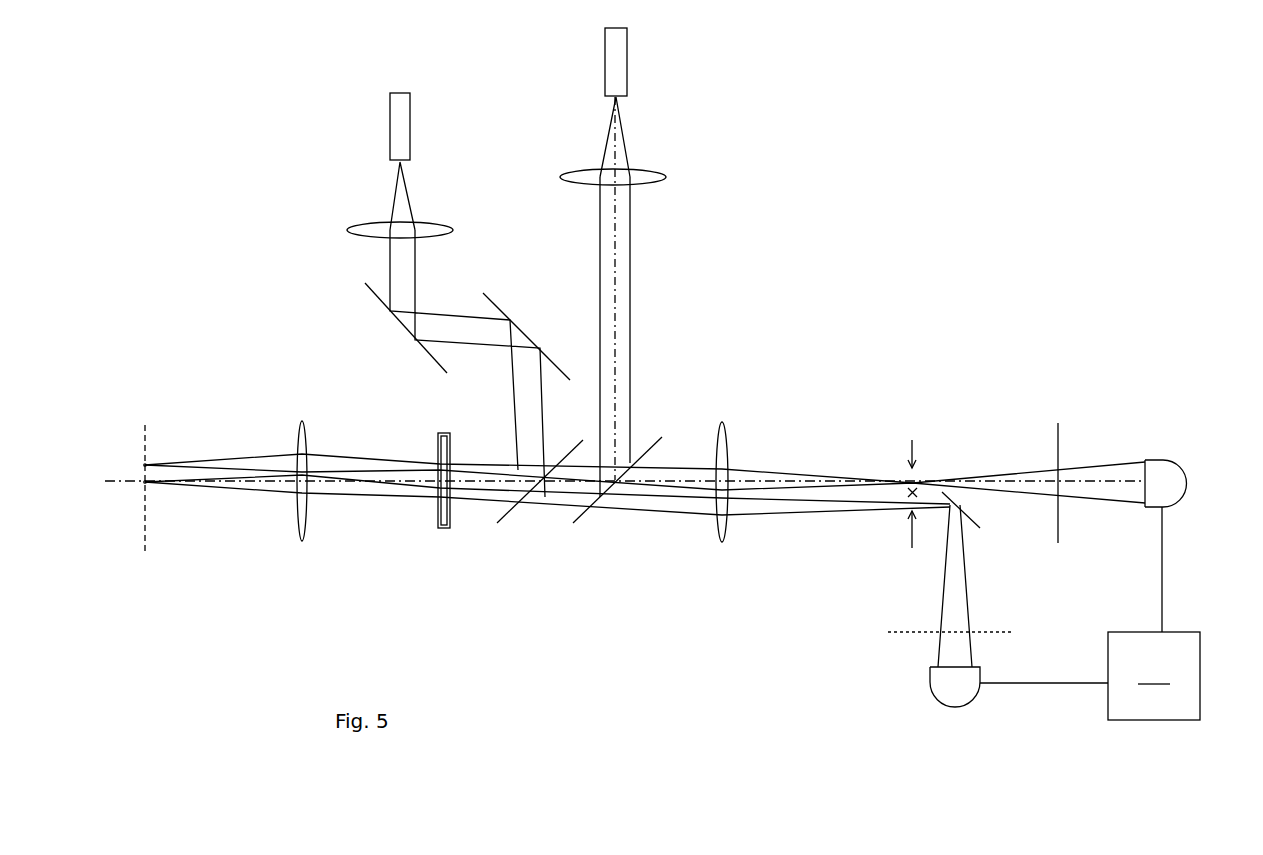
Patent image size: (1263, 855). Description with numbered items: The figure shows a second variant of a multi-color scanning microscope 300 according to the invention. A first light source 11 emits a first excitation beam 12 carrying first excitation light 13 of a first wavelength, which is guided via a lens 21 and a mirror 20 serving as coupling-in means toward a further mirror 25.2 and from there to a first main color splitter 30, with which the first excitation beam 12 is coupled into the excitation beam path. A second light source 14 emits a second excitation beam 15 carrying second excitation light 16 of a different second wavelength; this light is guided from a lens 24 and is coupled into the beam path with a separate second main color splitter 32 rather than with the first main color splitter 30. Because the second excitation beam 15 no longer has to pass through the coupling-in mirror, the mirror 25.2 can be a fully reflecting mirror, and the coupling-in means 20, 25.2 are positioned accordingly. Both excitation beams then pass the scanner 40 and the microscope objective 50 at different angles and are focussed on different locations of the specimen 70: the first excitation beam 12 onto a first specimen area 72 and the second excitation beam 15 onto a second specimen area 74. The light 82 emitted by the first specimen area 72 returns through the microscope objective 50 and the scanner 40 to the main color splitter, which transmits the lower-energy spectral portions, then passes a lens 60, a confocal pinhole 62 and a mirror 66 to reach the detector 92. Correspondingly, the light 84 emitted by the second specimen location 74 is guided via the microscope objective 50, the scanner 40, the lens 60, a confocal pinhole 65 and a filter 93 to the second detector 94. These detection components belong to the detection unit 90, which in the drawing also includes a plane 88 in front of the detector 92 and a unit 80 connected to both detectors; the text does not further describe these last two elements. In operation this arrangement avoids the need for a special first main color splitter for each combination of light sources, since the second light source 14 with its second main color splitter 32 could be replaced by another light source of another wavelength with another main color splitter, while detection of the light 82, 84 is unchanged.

The first light source 11 is at (397, 117).
The first excitation light 13 is at (402, 202).
The lens 21 is at (368, 233).
The first excitation beam 12 is at (407, 283).
The mirror 20 is at (372, 293).
The mirror 25.2 is at (495, 302).
The second light source 14 is at (618, 60).
The second excitation light 16 is at (622, 153).
The lens 24 is at (645, 180).
The second excitation beam 15 is at (623, 330).
The specimen 70 is at (145, 548).
The first specimen area 72 is at (143, 463).
The second specimen area 74 is at (143, 483).
The light emitted by the first specimen area 82 is at (263, 462).
The light emitted by the second specimen location 84 is at (265, 490).
The microscope objective 50 is at (303, 537).
The scanner 40 is at (438, 530).
The first main color splitter 30 is at (505, 523).
The second main color splitter 32 is at (580, 522).
The lens 60 is at (728, 447).
The confocal pinhole 65 is at (917, 452).
The confocal pinhole 62 is at (905, 532).
The mirror 66 is at (963, 512).
The filter 93 is at (1062, 433).
The second detector 94 is at (1168, 477).
The control / evaluation unit 80 is at (1090, 676).
The detector 92 is at (950, 687).
The detection plane 88 is at (902, 633).
The detection unit 90 is at (1027, 738).
The multi-color scanning microscope 300 is at (847, 292).